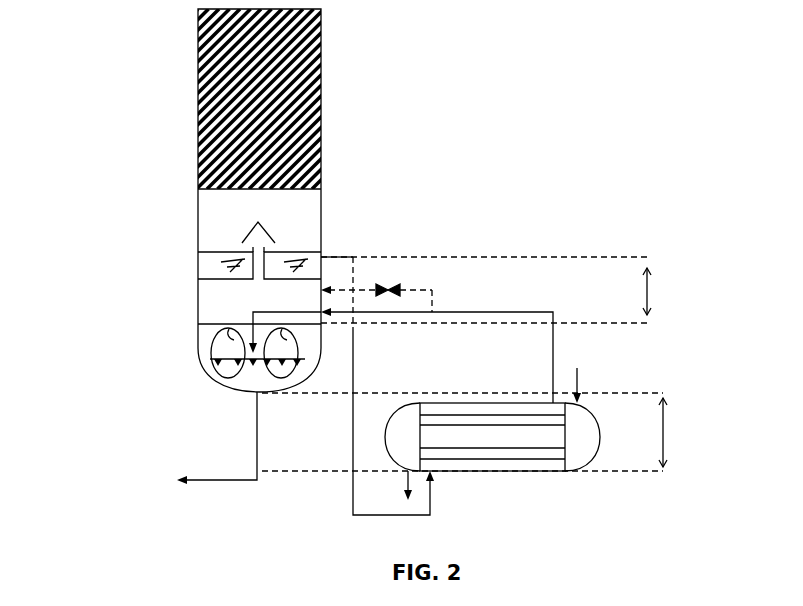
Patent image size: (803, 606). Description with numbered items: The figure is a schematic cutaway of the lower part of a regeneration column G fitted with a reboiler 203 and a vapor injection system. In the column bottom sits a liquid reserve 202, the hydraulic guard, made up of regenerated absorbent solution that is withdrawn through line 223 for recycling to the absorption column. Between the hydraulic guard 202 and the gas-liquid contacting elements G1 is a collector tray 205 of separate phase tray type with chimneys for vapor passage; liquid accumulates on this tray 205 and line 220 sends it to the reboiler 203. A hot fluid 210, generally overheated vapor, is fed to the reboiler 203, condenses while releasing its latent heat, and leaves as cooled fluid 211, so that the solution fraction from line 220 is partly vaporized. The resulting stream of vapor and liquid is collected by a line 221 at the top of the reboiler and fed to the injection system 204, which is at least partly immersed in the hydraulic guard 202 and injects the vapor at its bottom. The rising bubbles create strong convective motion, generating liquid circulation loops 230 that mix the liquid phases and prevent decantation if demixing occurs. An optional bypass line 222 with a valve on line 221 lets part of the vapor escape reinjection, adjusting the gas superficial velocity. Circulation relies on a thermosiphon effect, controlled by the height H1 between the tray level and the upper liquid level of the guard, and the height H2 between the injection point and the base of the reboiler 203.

The gas-liquid contacting elements G1 is at (285, 88).
The regeneration column G is at (321, 200).
The collector tray 205 is at (210, 277).
The injection system 204 is at (252, 312).
The liquid circulation loops 230 is at (212, 347).
The liquid reserve 202 is at (208, 360).
The line 223 is at (217, 438).
The line 220 is at (370, 386).
The bypass line 222 is at (378, 288).
The line 221 is at (437, 346).
The hot fluid 210 is at (581, 375).
The cooled fluid 211 is at (390, 487).
The reboiler 203 is at (493, 471).
The height H1 is at (502, 290).
The height H2 is at (481, 432).